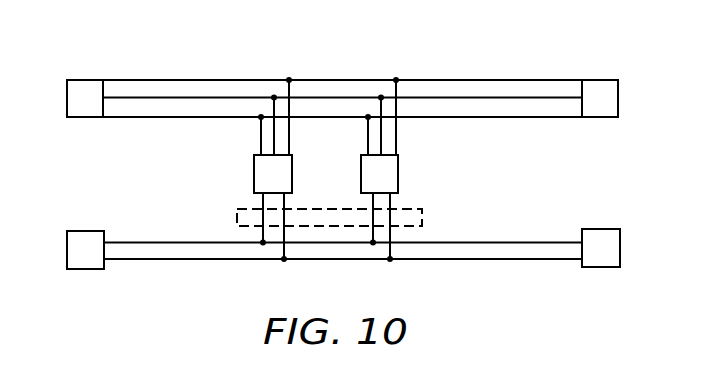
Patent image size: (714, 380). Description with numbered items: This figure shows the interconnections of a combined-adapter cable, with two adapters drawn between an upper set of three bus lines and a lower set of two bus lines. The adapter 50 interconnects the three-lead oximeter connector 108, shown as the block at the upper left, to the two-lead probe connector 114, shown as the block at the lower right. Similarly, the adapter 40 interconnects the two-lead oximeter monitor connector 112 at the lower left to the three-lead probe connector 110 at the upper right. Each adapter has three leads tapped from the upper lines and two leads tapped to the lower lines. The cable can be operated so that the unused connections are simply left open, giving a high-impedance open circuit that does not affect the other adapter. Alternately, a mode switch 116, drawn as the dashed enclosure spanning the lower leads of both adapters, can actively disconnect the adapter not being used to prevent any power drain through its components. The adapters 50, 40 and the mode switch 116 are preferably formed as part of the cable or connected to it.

The 3-lead oximeter connector 108 is at (69, 82).
The 3-lead probe connector 110 is at (621, 82).
The 2-lead oximeter monitor connector 112 is at (69, 231).
The 2-lead probe connector 114 is at (622, 230).
The adapter 50 is at (242, 169).
The adapter 40 is at (414, 169).
The mode switch 116 is at (365, 199).